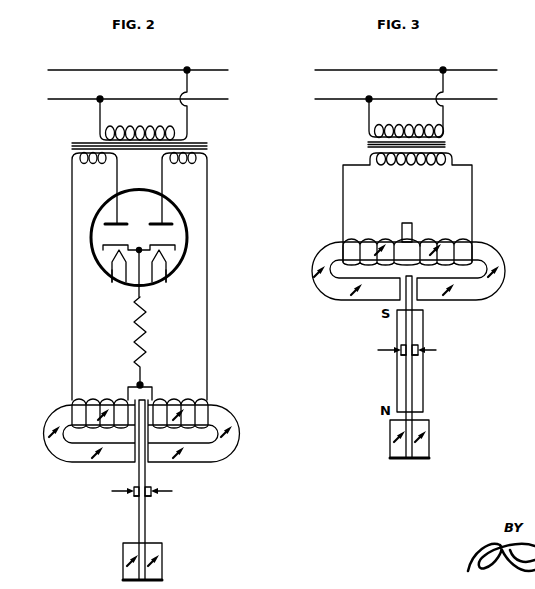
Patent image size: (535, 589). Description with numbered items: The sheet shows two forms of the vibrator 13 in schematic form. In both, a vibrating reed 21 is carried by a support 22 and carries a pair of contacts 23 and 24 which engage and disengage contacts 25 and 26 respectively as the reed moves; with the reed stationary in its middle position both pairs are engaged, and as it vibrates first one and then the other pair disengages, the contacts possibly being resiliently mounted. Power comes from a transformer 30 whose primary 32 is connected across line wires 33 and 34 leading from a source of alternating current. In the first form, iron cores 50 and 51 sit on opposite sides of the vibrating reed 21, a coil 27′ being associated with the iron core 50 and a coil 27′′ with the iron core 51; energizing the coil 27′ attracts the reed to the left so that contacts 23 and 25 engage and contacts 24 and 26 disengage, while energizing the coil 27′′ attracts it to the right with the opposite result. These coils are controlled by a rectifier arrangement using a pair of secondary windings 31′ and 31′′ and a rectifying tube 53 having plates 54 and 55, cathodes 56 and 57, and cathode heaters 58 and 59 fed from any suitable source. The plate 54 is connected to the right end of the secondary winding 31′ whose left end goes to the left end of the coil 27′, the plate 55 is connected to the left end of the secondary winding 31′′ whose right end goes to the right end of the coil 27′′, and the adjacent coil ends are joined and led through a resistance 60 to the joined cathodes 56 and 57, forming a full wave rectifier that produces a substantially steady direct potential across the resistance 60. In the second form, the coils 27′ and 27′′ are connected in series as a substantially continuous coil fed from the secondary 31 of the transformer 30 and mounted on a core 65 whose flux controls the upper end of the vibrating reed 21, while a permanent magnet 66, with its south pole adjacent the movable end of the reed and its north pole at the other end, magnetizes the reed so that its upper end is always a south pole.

In FIG. 2, the vibrator 13 is at (144, 444).
In FIG. 2, the vibrating reed 21 is at (150, 530).
In FIG. 3, the vibrating reed 21 is at (421, 392).
In FIG. 2, the support 22 is at (163, 560).
In FIG. 3, the support 22 is at (431, 437).
In FIG. 2, the contact 23 is at (136, 497).
In FIG. 3, the contact 23 is at (402, 356).
In FIG. 2, the contact 24 is at (150, 497).
In FIG. 3, the contact 24 is at (418, 356).
In FIG. 2, the contact 25 is at (134, 486).
In FIG. 3, the contact 25 is at (400, 346).
In FIG. 2, the contact 26 is at (152, 486).
In FIG. 3, the contact 26 is at (419, 346).
In FIG. 2, the coil 27′ is at (84, 399).
In FIG. 3, the coil 27′ is at (356, 239).
In FIG. 2, the coil 27′′ is at (167, 399).
In FIG. 3, the coil 27′′ is at (426, 239).
In FIG. 2, the transformer 30 is at (212, 146).
In FIG. 3, the transformer 30 is at (457, 145).
In FIG. 3, the secondary 31 is at (396, 166).
In FIG. 2, the secondary winding 31′ is at (90, 163).
In FIG. 2, the secondary winding 31′′ is at (180, 163).
In FIG. 2, the primary 32 is at (133, 124).
In FIG. 3, the primary 32 is at (407, 124).
In FIG. 2, the line wire 33 is at (210, 101).
In FIG. 3, the line wire 33 is at (465, 101).
In FIG. 2, the line wire 34 is at (206, 69).
In FIG. 3, the line wire 34 is at (461, 69).
In FIG. 2, the iron core 50 is at (49, 420).
In FIG. 2, the iron core 51 is at (236, 418).
In FIG. 2, the rectifying tube 53 is at (128, 190).
In FIG. 2, the plate 54 is at (100, 213).
In FIG. 2, the plate 55 is at (178, 213).
In FIG. 2, the cathode 56 is at (112, 264).
In FIG. 2, the cathode 57 is at (166, 264).
In FIG. 2, the cathode heater 58 is at (112, 272).
In FIG. 2, the cathode heater 59 is at (166, 272).
In FIG. 2, the resistance 60 is at (146, 326).
In FIG. 3, the core 65 is at (488, 250).
In FIG. 3, the permanent magnet 66 is at (419, 328).